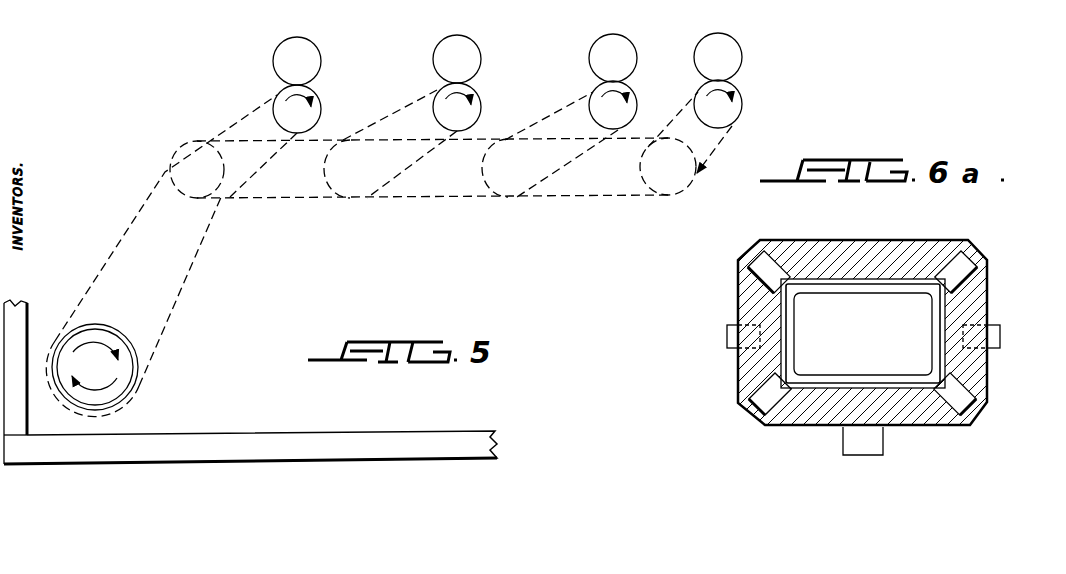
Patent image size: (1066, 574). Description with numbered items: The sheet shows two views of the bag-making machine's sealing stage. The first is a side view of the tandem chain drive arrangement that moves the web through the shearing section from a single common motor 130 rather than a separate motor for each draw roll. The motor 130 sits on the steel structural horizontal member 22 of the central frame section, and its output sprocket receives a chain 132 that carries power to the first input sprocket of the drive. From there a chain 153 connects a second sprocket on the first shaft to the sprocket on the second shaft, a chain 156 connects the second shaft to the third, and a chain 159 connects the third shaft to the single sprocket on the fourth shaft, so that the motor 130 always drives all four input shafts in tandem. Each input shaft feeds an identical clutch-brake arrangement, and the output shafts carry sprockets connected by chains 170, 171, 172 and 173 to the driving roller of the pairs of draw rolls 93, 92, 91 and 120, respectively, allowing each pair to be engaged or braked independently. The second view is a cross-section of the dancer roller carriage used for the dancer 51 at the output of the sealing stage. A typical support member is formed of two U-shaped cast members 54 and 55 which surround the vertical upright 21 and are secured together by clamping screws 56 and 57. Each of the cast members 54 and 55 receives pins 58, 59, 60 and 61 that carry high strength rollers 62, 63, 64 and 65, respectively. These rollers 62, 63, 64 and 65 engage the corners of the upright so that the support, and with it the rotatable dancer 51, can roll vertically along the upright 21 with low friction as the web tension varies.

In FIG. 5, the horizontal member 22 is at (312, 442).
In FIG. 5, the motor 130 is at (115, 373).
In FIG. 5, the chain 132 is at (182, 287).
In FIG. 5, the chain 153 is at (262, 200).
In FIG. 5, the chain 156 is at (412, 198).
In FIG. 5, the chain 159 is at (567, 195).
In FIG. 5, the pair of draw rolls 93 is at (323, 81).
In FIG. 5, the pair of draw rolls 92 is at (482, 79).
In FIG. 5, the pair of draw rolls 91 is at (633, 79).
In FIG. 5, the pair of draw rolls 120 is at (741, 75).
In FIG. 5, the chain 170 is at (241, 101).
In FIG. 5, the chain 171 is at (398, 95).
In FIG. 5, the chain 172 is at (557, 94).
In FIG. 5, the chain 173 is at (674, 113).
In FIG. 6a, the upright 21 is at (940, 328).
In FIG. 6a, the dancer 51 is at (883, 446).
In FIG. 6a, the U-shaped cast member 54 is at (988, 253).
In FIG. 6a, the U-shaped cast member 55 is at (992, 383).
In FIG. 6a, the clamping screw 56 is at (747, 332).
In FIG. 6a, the clamping screw 57 is at (1000, 338).
In FIG. 6a, the pin 58 is at (795, 250).
In FIG. 6a, the pin 59 is at (934, 252).
In FIG. 6a, the pin 60 is at (937, 422).
In FIG. 6a, the pin 61 is at (739, 381).
In FIG. 6a, the high strength roller 62 is at (748, 275).
In FIG. 6a, the high strength roller 63 is at (988, 272).
In FIG. 6a, the high strength roller 64 is at (972, 395).
In FIG. 6a, the high strength roller 65 is at (780, 414).